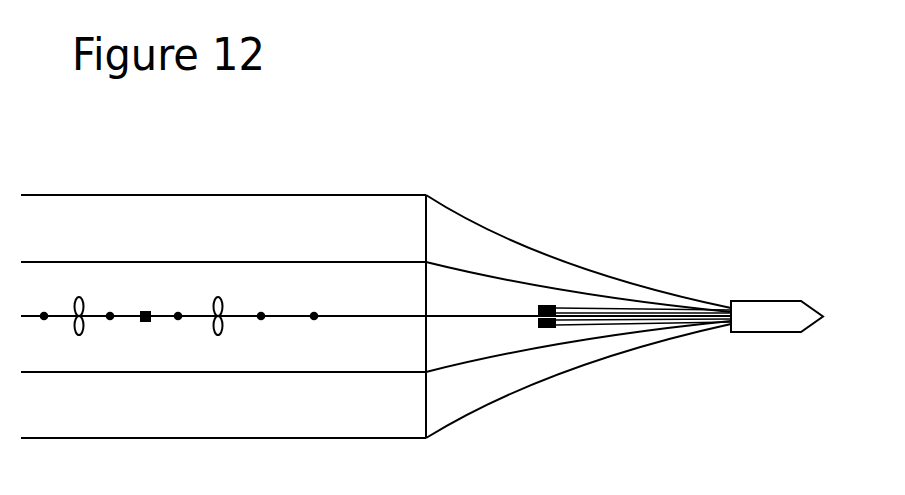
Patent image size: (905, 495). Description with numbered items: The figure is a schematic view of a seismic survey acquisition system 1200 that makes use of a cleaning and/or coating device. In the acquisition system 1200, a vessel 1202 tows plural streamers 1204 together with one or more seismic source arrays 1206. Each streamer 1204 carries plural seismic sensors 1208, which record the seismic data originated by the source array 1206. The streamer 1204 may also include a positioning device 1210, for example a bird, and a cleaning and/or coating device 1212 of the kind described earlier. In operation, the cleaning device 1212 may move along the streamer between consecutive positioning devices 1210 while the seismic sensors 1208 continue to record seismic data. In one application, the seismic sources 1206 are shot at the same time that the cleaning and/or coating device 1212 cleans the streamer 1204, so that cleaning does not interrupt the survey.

The acquisition system 1200 is at (442, 123).
The vessel 1202 is at (775, 301).
The streamer 1204 is at (383, 318).
The seismic source array 1206 is at (548, 305).
The seismic sensor 1208 is at (221, 298).
The positioning device 1210 is at (78, 297).
The cleaning and/or coating device 1212 is at (146, 311).